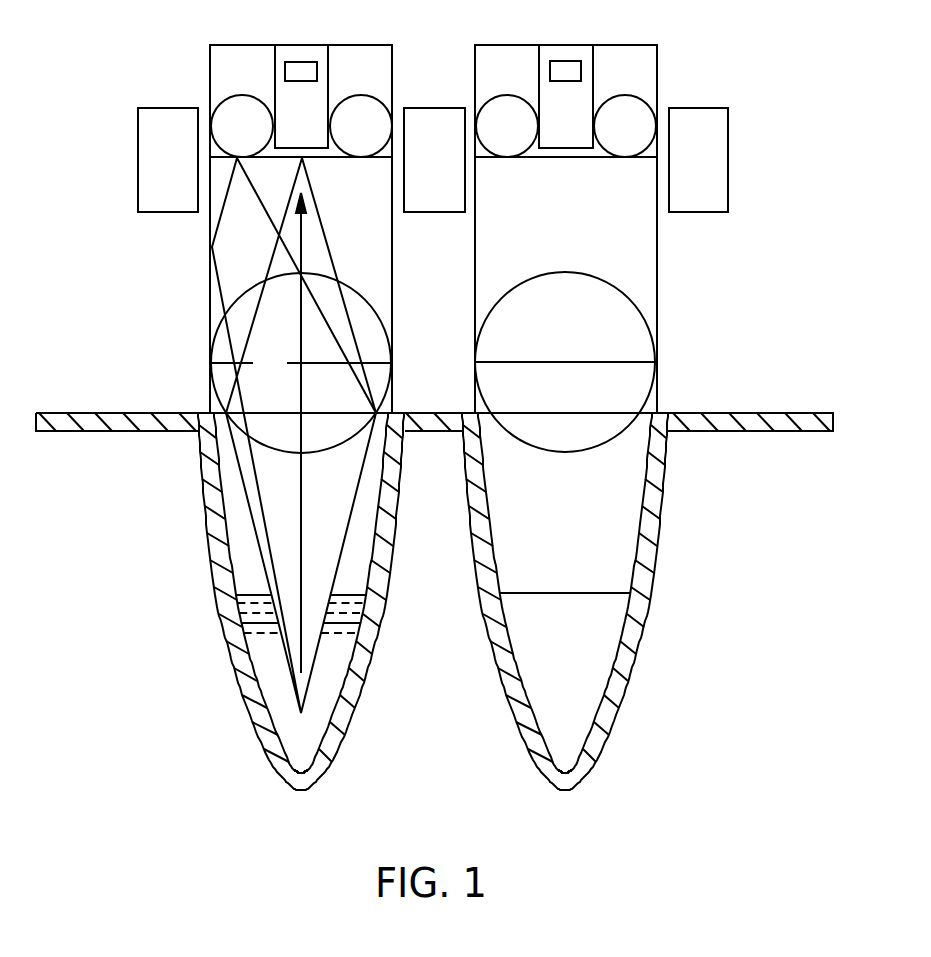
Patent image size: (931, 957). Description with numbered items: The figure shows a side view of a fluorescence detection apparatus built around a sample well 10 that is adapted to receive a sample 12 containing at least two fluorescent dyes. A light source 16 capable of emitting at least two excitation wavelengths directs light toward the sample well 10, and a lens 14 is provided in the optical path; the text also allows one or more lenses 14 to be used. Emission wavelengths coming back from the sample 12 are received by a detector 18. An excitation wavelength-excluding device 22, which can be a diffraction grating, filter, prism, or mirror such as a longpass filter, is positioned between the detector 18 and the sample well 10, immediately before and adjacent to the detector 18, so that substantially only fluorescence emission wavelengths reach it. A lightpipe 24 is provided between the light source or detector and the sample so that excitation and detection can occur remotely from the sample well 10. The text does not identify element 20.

The sample well 10 is at (213, 572).
The sample 12 is at (248, 628).
The lens 14 is at (213, 383).
The light source 16 is at (365, 95).
The detector 18 is at (302, 68).
The light source 20 is at (238, 95).
The excitation wavelength-excluding device 22 is at (312, 148).
The lightpipe 24 is at (210, 228).